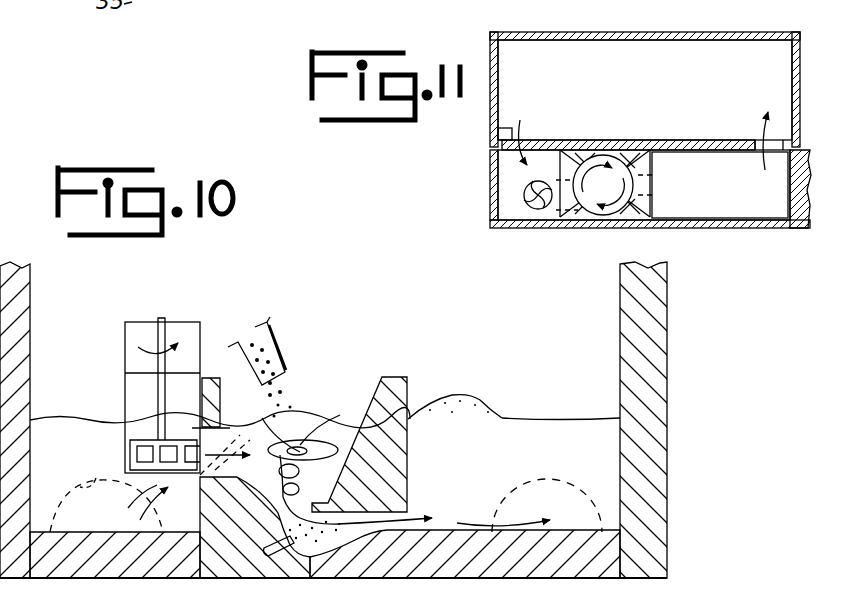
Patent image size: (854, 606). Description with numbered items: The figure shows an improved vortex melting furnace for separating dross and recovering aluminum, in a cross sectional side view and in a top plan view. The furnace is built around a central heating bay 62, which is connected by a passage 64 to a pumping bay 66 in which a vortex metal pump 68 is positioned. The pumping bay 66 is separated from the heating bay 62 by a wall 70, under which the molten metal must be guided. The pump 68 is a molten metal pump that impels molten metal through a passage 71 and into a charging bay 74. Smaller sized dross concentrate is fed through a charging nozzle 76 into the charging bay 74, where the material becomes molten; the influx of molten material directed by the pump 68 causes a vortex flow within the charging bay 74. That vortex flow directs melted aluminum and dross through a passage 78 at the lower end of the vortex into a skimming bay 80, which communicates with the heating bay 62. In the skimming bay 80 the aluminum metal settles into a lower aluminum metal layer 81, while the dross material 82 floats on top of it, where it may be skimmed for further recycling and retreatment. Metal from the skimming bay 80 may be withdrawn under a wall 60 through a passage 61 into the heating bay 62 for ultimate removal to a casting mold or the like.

In FIG. 10, the wall 60 is at (333, 420).
In FIG. 11, the wall 60 is at (690, 143).
In FIG. 10, the passage 61 is at (575, 479).
In FIG. 11, the central heating bay 62 is at (742, 55).
In FIG. 10, the passage 64 is at (96, 478).
In FIG. 11, the passage 64 is at (500, 137).
In FIG. 10, the pumping bay 66 is at (70, 454).
In FIG. 11, the pumping bay 66 is at (512, 178).
In FIG. 10, the vortex metal pump 68 is at (143, 437).
In FIG. 11, the vortex metal pump 68 is at (535, 210).
In FIG. 11, the wall 70 is at (553, 140).
In FIG. 10, the passage 71 is at (230, 433).
In FIG. 10, the charging bay 74 is at (340, 413).
In FIG. 10, the charging nozzle 76 is at (275, 342).
In FIG. 10, the passage 78 is at (410, 512).
In FIG. 10, the skimming bay 80 is at (570, 449).
In FIG. 11, the skimming bay 80 is at (722, 192).
In FIG. 10, the aluminum metal layer 81 is at (510, 430).
In FIG. 10, the dross material 82 is at (455, 396).